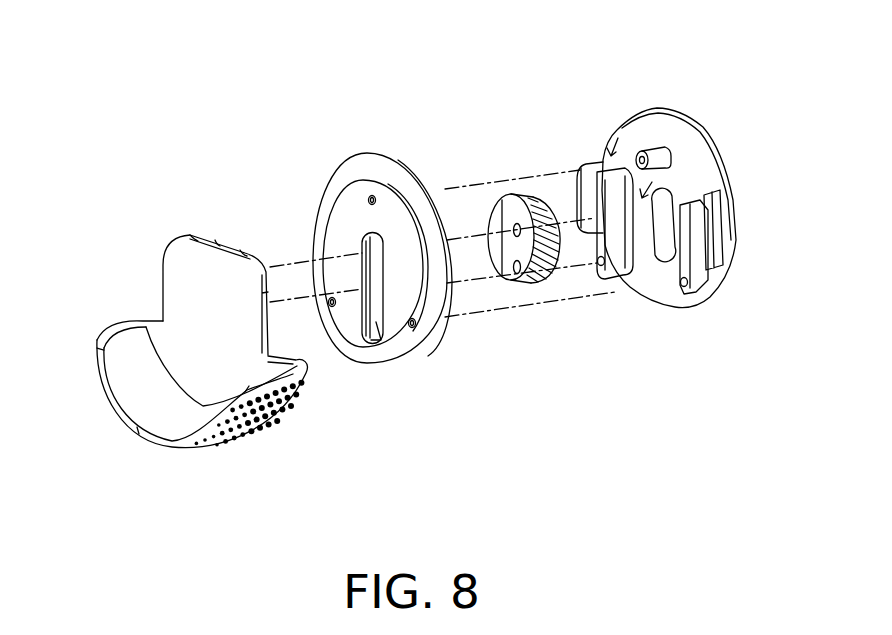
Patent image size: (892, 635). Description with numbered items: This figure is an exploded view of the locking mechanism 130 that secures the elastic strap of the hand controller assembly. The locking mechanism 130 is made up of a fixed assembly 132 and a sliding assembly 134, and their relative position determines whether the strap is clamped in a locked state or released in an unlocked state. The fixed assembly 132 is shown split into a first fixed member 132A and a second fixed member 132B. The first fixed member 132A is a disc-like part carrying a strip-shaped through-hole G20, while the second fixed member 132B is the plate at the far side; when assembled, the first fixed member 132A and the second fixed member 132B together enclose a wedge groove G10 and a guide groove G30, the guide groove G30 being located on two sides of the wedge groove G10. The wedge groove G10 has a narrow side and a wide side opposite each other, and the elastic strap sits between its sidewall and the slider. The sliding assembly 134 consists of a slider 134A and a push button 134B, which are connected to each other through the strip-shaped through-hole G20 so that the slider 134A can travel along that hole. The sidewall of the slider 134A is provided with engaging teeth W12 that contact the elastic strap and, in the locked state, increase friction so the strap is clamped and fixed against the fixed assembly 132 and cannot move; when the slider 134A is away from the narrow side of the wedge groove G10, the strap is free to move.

The locking mechanism 130 is at (757, 457).
The fixed assembly 132 is at (643, 26).
The first fixed member 132A is at (365, 158).
The second fixed member 132B is at (627, 115).
The strip-shaped through-hole G20 is at (380, 345).
The guide groove G30 is at (645, 112).
The wedge groove G10 is at (668, 150).
The sliding assembly 134 is at (530, 469).
The slider 134A is at (507, 279).
The push button 134B is at (165, 446).
The engaging teeth W12 is at (556, 270).